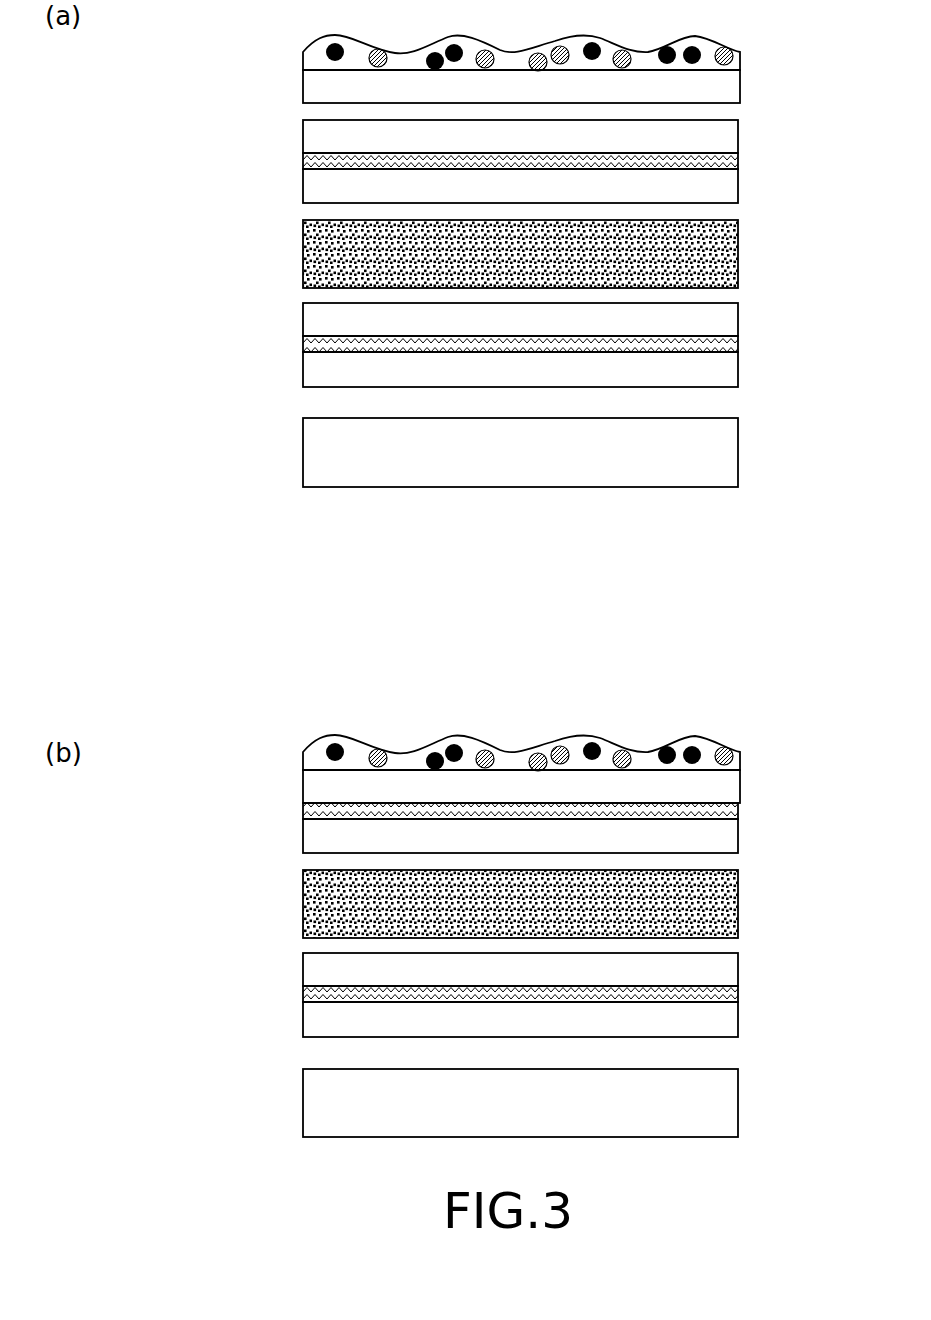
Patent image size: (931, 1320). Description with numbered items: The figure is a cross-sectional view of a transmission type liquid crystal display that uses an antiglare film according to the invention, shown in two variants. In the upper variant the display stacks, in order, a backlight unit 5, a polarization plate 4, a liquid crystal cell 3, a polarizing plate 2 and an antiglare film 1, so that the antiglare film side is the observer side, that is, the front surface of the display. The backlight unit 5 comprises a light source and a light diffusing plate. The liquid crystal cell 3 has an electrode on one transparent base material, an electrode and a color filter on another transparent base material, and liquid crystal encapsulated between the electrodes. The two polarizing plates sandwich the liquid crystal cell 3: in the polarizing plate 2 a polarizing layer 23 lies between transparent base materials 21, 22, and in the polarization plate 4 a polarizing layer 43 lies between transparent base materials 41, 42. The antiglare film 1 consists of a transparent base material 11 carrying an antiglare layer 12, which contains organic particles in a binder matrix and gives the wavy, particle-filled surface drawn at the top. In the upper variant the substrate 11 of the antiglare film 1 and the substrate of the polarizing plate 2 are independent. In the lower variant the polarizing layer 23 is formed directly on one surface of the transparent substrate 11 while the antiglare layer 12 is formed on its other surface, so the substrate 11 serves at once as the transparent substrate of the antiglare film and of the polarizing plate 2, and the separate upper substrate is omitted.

The antiglare film 1 is at (488, 419).
The base material 11 is at (330, 82).
The antiglare layer 12 is at (288, 35).
The polarizing plate 2 is at (514, 495).
The base material 21 is at (320, 135).
The base material 22 is at (328, 194).
The polarizing layer 23 is at (320, 158).
The liquid crystal cell 3 is at (713, 273).
The polarization plate 4 is at (489, 676).
The base material 41 is at (323, 316).
The base material 42 is at (330, 373).
The polarizing layer 43 is at (320, 345).
The backlight unit 5 is at (720, 460).